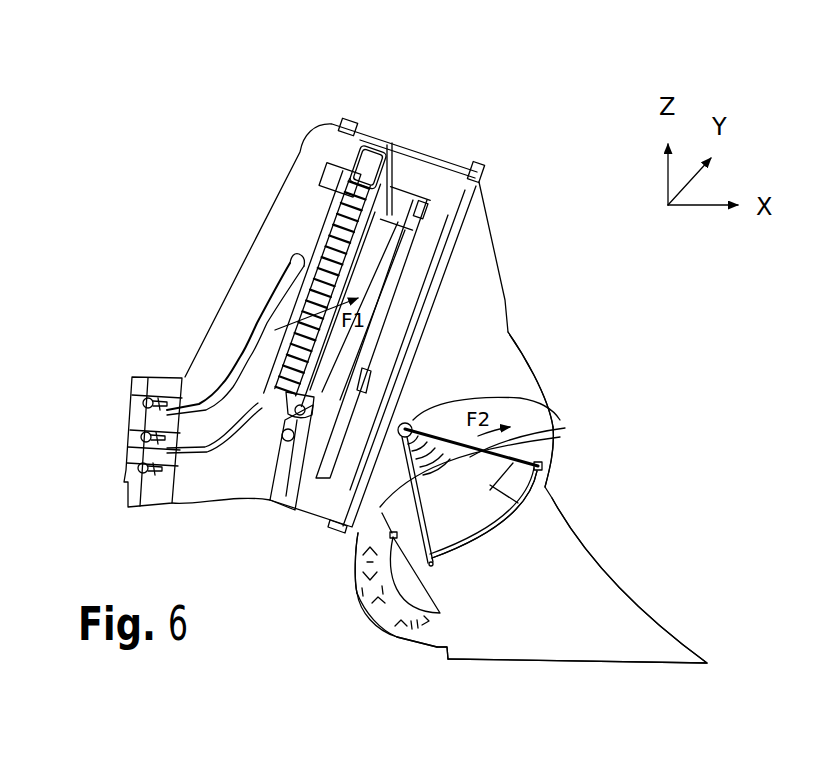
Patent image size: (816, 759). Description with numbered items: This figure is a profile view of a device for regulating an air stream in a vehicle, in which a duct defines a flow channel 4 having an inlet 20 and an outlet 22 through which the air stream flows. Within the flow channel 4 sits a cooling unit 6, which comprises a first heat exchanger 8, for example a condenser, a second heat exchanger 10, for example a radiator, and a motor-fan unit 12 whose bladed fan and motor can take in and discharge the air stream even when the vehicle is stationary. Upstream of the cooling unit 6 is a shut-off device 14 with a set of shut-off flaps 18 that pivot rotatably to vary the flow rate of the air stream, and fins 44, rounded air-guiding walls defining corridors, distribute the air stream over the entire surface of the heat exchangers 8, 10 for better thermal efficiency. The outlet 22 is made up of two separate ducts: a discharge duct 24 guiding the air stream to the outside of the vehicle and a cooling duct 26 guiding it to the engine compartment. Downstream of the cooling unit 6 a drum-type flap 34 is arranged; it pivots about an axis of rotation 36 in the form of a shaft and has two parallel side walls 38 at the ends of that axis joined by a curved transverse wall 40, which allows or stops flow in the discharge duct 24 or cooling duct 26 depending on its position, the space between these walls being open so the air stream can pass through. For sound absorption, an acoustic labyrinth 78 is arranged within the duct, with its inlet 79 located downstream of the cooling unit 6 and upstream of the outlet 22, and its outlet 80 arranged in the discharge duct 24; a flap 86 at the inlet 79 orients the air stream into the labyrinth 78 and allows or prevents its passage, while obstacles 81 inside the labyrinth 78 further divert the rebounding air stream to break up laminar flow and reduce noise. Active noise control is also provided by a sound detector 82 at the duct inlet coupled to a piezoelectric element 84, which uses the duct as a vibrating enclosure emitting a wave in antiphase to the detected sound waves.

The flow channel 4 is at (481, 329).
The cooling unit 6 is at (425, 134).
The first heat exchanger 8 is at (347, 210).
The second heat exchanger 10 is at (385, 257).
The motor-fan unit 12 is at (415, 277).
The shut-off device 14 is at (137, 367).
The shut-off flaps 18 is at (132, 400).
The inlet 20 is at (128, 452).
The outlet 22 is at (513, 437).
The discharge duct 24 is at (548, 566).
The cooling duct 26 is at (550, 388).
The flap 34 is at (528, 505).
The axis of rotation 36 is at (470, 400).
The side walls 38 is at (484, 514).
The transverse wall 40 is at (495, 530).
The fins 44 is at (270, 285).
The acoustic labyrinth 78 is at (352, 603).
The inlet 79 is at (356, 545).
The outlet 80 is at (447, 636).
The obstacles 81 is at (393, 625).
The sound detector 82 is at (350, 119).
The piezoelectric element 84 is at (484, 164).
The flap 86 is at (540, 462).